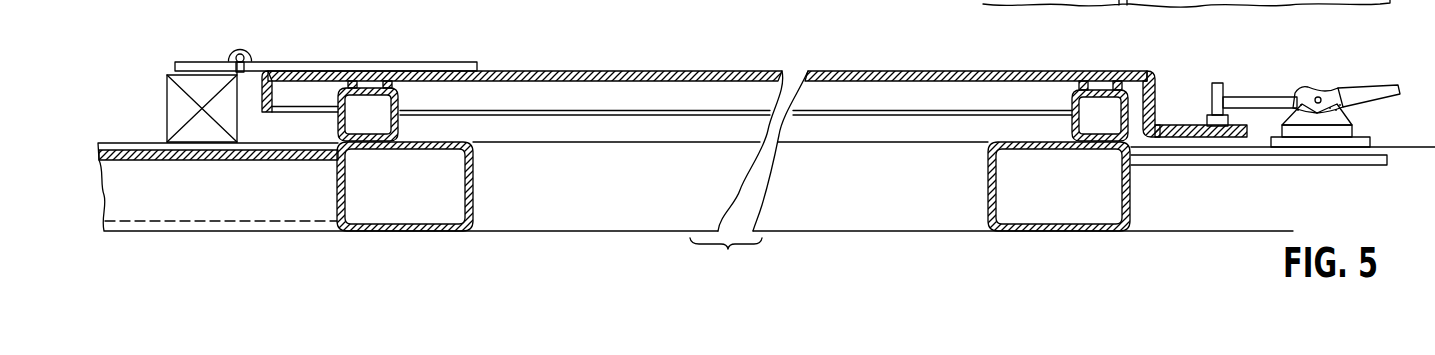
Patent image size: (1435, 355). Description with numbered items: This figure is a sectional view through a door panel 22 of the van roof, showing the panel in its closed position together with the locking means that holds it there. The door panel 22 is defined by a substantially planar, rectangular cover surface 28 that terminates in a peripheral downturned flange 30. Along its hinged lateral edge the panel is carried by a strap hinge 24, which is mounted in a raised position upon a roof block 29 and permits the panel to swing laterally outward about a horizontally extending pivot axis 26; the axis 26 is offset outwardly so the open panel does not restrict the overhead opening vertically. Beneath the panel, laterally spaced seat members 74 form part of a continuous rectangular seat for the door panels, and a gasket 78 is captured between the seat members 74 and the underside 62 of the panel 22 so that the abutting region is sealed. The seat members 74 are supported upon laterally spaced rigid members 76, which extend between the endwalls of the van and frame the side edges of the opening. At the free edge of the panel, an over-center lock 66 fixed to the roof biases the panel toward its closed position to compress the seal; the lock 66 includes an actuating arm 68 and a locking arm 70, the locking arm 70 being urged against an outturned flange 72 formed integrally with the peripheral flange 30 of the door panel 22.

The door panel 22 is at (664, 61).
The strap hinge 24 is at (266, 57).
The pivot axis 26 is at (237, 50).
The cover surface 28 is at (872, 71).
The roof block 29 is at (180, 108).
The peripheral downturned flange 30 is at (275, 100).
The underside 62 is at (960, 90).
The over-center lock 66 is at (1333, 70).
The actuating arm 68 is at (1377, 96).
The locking arm 70 is at (1249, 99).
The outturned flange 72 is at (1189, 125).
The seat member 74 is at (388, 83).
The rigid member 76 is at (475, 197).
The gasket 78 is at (371, 84).